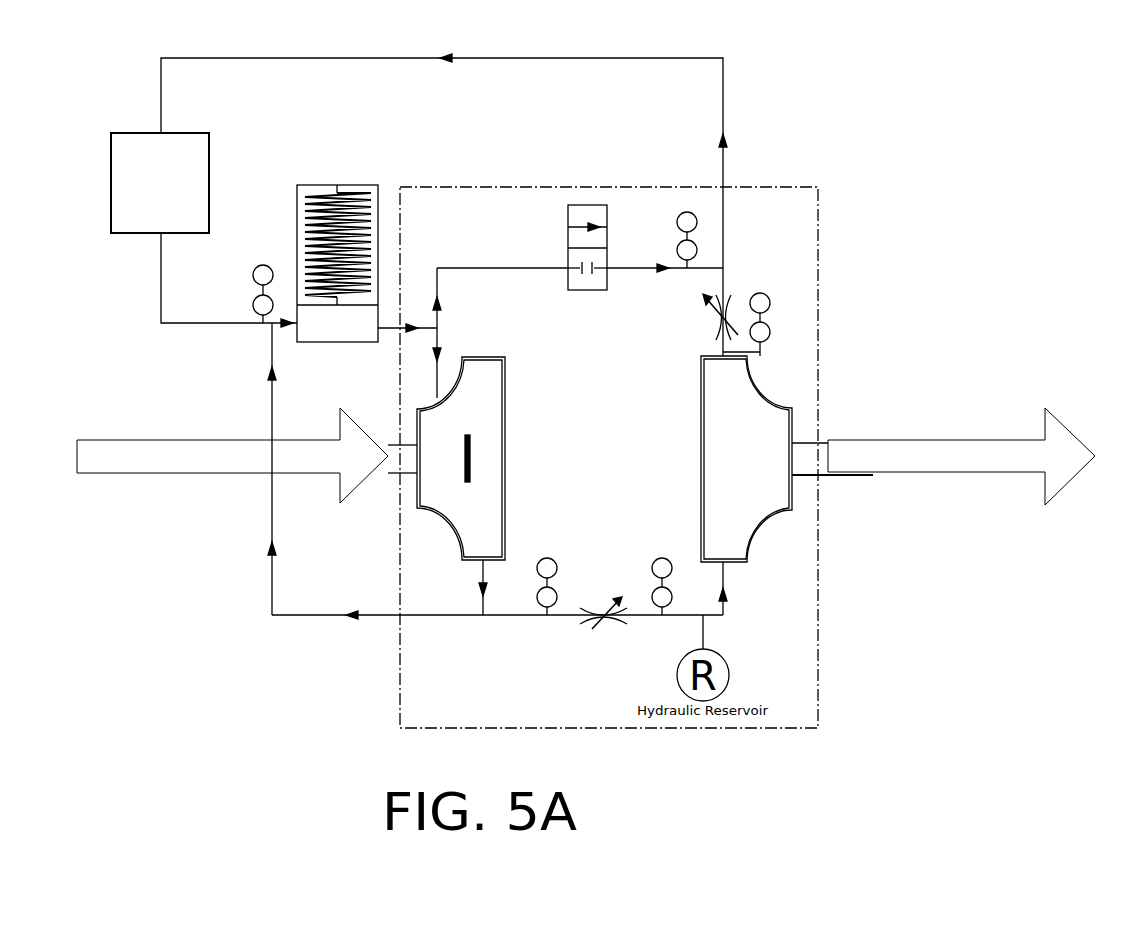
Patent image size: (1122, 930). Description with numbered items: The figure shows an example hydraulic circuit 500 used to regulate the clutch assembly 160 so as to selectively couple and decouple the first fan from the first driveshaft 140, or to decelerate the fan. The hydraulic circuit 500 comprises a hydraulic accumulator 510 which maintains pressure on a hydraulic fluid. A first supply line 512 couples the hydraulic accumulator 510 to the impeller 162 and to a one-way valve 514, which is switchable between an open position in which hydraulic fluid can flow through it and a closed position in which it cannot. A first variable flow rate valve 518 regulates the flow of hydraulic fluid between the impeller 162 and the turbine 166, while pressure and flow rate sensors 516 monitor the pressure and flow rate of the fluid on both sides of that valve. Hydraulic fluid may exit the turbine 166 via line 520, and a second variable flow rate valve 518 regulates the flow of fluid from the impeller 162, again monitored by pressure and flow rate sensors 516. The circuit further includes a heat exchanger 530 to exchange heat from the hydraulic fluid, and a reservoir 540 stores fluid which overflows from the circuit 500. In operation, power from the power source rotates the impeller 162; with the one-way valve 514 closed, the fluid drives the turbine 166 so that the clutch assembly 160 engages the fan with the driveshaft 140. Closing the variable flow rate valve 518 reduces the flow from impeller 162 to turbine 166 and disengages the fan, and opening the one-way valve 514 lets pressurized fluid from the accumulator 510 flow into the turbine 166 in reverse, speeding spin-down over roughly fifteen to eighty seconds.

The hydraulic circuit 500 is at (852, 78).
The hydraulic accumulator 510 is at (308, 205).
The first supply line 512 is at (438, 268).
The one-way valve 514 is at (574, 220).
The pressure and flow rate sensors 516 is at (262, 265).
The variable flow rate valve 518 is at (690, 313).
The line 520 is at (685, 135).
The heat exchanger 530 is at (160, 183).
The reservoir 540 is at (194, 385).
The first driveshaft 140 is at (388, 440).
The clutch assembly 160 is at (735, 200).
The impeller 162 is at (457, 356).
The turbine 166 is at (670, 427).